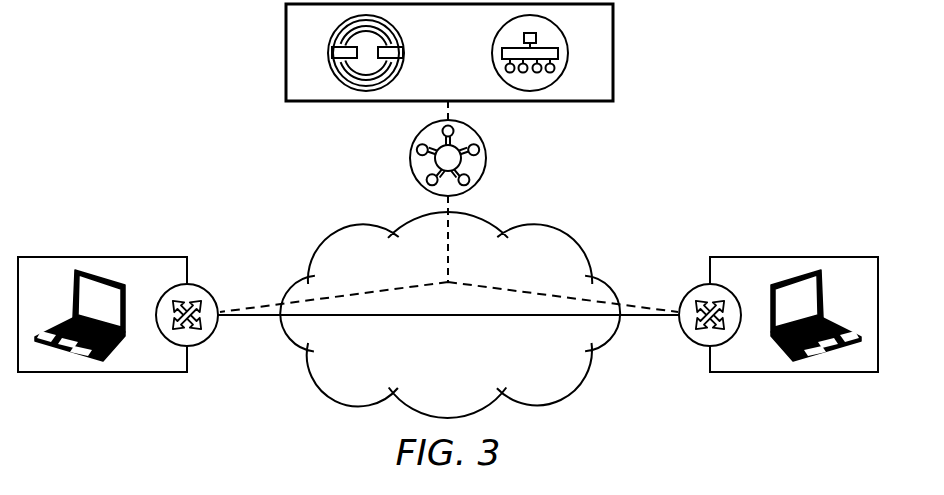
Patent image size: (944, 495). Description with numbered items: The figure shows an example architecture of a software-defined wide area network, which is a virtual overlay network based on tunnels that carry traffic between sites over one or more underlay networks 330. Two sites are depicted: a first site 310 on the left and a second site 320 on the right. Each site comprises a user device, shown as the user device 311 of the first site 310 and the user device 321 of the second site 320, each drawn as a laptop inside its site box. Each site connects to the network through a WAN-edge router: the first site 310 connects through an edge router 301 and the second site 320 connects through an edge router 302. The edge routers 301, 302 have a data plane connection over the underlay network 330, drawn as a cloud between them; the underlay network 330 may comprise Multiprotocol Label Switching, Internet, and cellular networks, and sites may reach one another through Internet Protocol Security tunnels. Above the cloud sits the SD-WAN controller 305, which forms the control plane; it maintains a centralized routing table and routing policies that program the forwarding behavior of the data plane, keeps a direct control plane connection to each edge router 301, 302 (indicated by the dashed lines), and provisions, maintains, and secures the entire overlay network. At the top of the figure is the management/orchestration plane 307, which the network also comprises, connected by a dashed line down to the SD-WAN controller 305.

The management/orchestration plane 307 is at (613, 47).
The SD-WAN controller 305 is at (414, 179).
The underlay network 330 is at (433, 374).
The first site 310 is at (187, 272).
The user device 311 is at (110, 348).
The edge router 301 is at (203, 340).
The second site 320 is at (710, 272).
The user device 321 is at (788, 350).
The edge router 302 is at (692, 344).